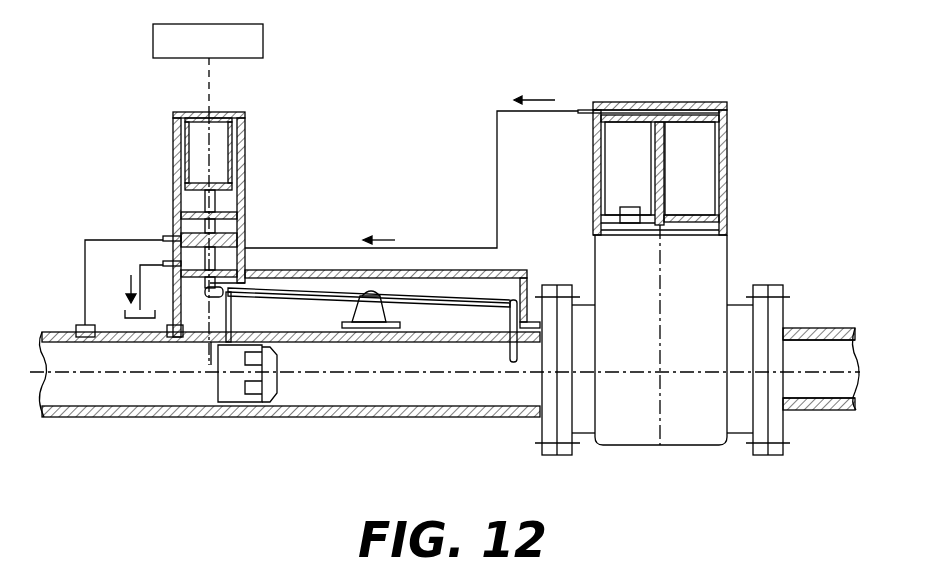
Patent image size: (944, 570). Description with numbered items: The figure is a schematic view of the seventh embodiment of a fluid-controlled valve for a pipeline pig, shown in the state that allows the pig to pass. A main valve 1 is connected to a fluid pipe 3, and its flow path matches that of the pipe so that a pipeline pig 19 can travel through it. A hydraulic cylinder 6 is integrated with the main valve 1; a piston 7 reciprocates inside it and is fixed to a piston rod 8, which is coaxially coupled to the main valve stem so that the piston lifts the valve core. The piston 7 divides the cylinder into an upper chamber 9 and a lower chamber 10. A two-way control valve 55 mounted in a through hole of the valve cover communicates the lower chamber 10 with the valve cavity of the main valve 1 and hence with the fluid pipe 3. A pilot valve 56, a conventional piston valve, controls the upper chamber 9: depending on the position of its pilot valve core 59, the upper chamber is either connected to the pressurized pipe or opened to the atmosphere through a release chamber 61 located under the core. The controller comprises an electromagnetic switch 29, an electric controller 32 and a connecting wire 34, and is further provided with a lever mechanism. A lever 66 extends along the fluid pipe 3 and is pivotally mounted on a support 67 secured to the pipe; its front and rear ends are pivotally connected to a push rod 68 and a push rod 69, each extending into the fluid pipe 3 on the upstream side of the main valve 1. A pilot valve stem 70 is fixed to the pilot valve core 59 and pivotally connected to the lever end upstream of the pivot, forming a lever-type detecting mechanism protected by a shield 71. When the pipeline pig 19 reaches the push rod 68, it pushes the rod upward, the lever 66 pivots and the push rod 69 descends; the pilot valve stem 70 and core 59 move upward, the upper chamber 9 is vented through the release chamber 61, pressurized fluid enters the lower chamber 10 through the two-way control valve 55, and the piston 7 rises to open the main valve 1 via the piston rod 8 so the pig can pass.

The main valve 1 is at (640, 410).
The fluid pipe 3 is at (400, 415).
The hydraulic cylinder 6 is at (685, 102).
The piston 7 is at (720, 116).
The piston rod 8 is at (665, 222).
The upper chamber 9 is at (628, 112).
The lower chamber 10 is at (698, 178).
The pipeline pig 19 is at (237, 402).
The electromagnetic switch 29 is at (232, 145).
The electric controller 32 is at (263, 40).
The connecting wire 34 is at (209, 95).
The two-way control valve 55 is at (635, 225).
The pilot valve 56 is at (245, 190).
The pilot valve core 59 is at (230, 247).
The release chamber 61 is at (163, 250).
The lever 66 is at (425, 300).
The support 67 is at (372, 310).
The push rod 68 is at (240, 318).
The push rod 69 is at (510, 352).
The pilot valve stem 70 is at (255, 288).
The shield 71 is at (522, 270).